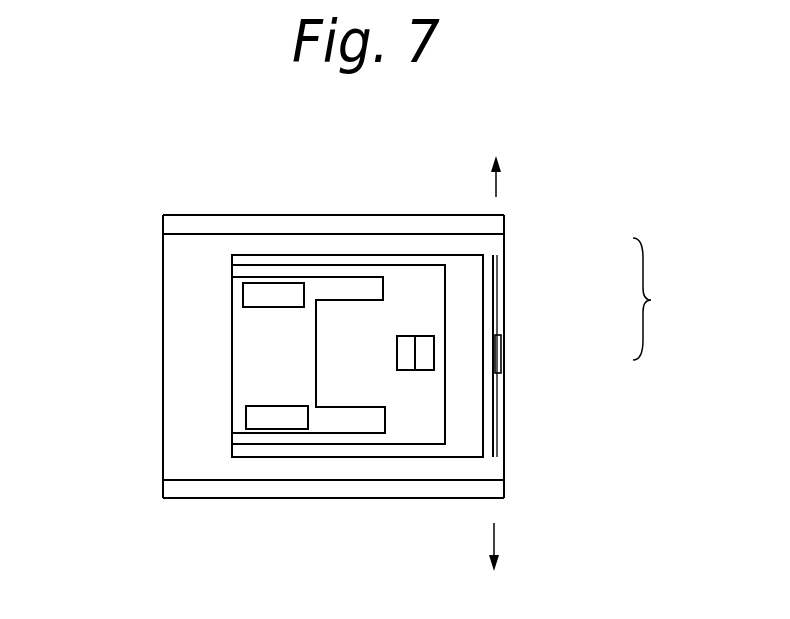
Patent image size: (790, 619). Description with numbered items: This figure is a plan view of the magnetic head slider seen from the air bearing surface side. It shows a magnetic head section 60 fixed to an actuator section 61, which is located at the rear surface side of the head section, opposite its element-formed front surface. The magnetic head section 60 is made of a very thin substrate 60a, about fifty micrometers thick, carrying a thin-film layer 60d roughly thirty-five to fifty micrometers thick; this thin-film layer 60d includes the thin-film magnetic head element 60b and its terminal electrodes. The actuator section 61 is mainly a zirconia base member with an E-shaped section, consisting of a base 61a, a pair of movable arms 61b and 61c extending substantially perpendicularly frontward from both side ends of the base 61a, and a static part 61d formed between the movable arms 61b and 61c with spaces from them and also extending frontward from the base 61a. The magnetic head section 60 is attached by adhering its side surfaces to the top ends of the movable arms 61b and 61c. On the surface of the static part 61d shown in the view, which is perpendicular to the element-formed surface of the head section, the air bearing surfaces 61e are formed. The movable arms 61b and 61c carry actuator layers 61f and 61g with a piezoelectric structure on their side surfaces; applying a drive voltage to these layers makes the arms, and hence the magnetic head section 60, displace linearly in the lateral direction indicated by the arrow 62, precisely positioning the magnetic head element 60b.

The actuator section 61 is at (374, 192).
The base 61a is at (185, 383).
The movable arm 61b is at (320, 231).
The movable arm 61c is at (382, 470).
The static part 61d is at (421, 288).
The ABS 61e is at (262, 296).
The actuator layer 61f is at (251, 229).
The actuator layer 61g is at (286, 490).
The arrow 62 is at (497, 178).
The magnetic head section 60 is at (663, 299).
The substrate 60a is at (486, 282).
The thin-film layer 60d is at (500, 317).
The thin-film magnetic head element 60b is at (500, 365).